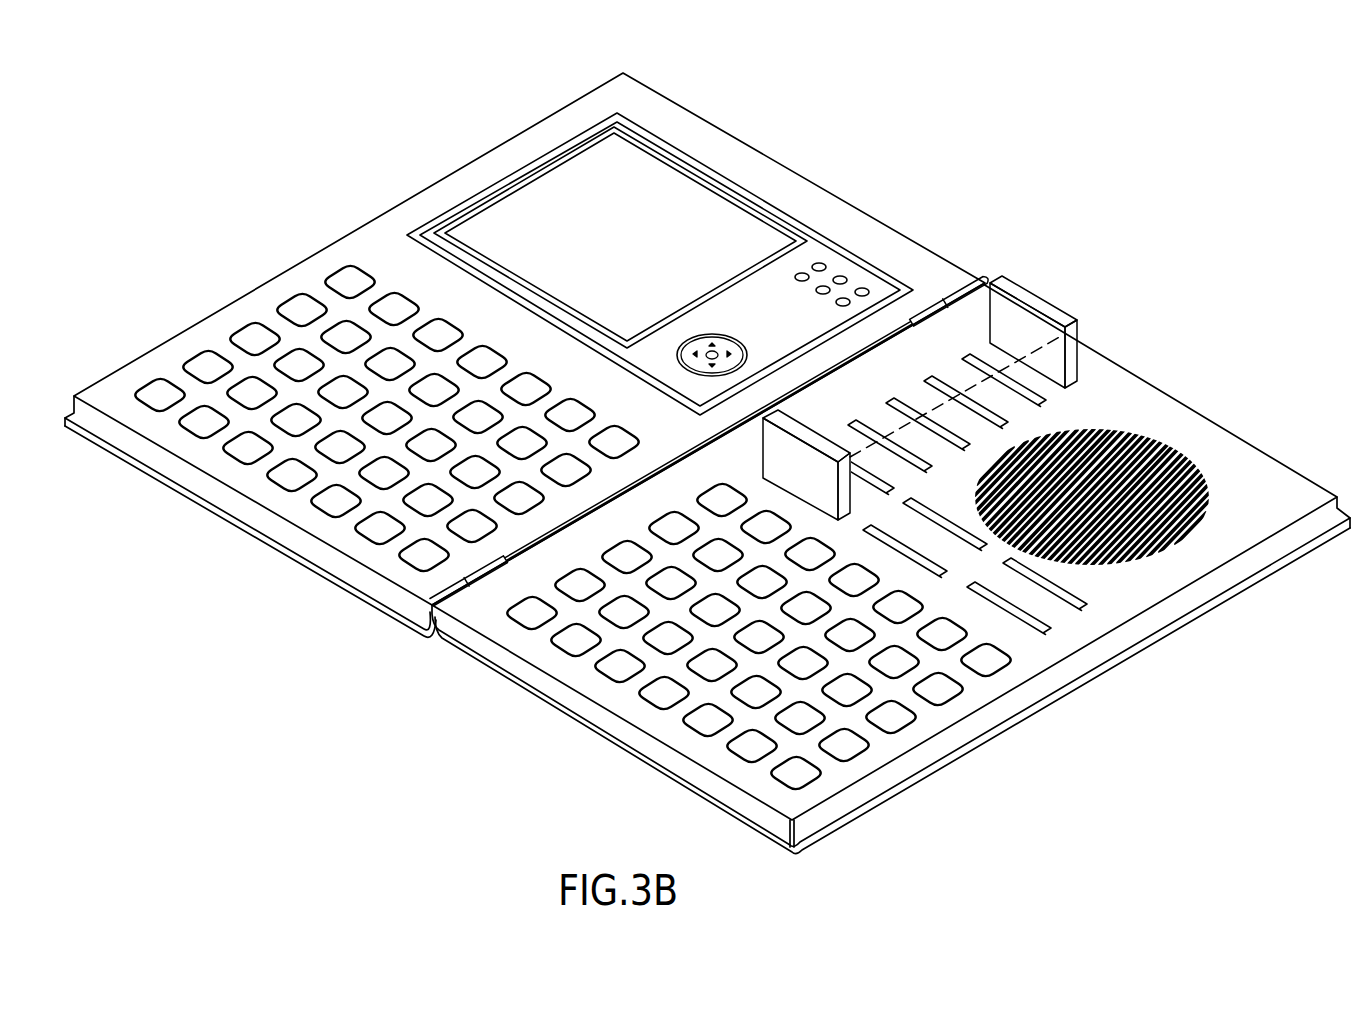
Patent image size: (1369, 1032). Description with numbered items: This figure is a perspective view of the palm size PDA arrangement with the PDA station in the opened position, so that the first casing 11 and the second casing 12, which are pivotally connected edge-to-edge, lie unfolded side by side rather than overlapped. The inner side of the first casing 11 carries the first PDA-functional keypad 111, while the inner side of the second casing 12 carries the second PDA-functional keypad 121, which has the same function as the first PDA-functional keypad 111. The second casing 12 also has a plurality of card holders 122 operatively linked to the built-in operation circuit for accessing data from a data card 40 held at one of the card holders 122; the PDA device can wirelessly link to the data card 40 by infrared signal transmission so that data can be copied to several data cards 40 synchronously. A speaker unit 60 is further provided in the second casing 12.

The first casing 11 is at (525, 355).
The first PDA-functional keypad 111 is at (313, 312).
The second casing 12 is at (896, 565).
The second PDA-functional keypad 121 is at (958, 684).
The card holders 122 is at (1073, 370).
The data card 40 is at (1088, 330).
The speaker unit 60 is at (1195, 456).